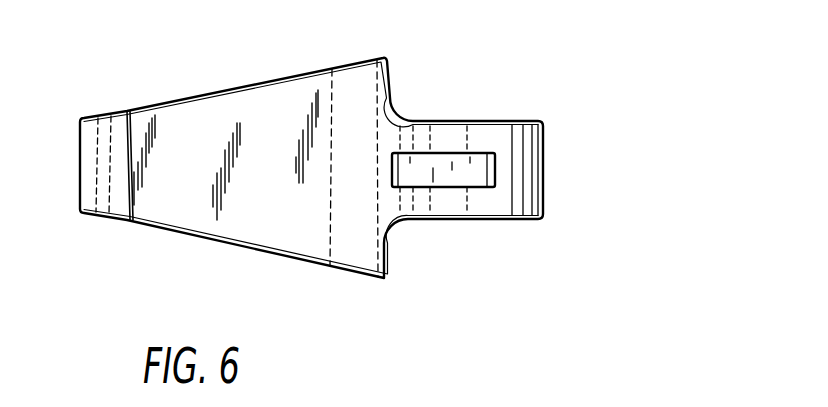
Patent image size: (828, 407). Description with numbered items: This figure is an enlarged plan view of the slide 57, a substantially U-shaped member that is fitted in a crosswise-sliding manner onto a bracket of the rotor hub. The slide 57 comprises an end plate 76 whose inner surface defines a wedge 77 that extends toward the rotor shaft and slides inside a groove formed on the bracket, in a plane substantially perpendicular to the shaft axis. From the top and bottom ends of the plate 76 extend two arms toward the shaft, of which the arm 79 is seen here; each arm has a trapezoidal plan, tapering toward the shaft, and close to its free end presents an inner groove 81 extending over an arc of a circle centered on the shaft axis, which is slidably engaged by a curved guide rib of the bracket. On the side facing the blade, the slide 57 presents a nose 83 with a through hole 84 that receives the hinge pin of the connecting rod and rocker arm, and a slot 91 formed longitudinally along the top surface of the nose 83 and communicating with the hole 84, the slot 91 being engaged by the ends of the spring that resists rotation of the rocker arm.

The slide 57 is at (403, 89).
The end plate 76 is at (381, 258).
The wedge 77 is at (353, 248).
The arm 79 is at (240, 229).
The inner groove 81 is at (114, 153).
The nose 83 is at (525, 151).
The through hole 84 is at (466, 150).
The slot 91 is at (471, 180).